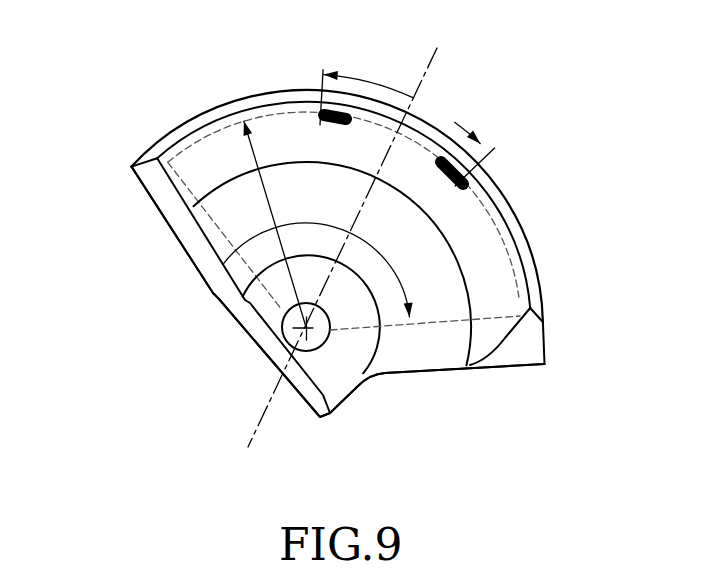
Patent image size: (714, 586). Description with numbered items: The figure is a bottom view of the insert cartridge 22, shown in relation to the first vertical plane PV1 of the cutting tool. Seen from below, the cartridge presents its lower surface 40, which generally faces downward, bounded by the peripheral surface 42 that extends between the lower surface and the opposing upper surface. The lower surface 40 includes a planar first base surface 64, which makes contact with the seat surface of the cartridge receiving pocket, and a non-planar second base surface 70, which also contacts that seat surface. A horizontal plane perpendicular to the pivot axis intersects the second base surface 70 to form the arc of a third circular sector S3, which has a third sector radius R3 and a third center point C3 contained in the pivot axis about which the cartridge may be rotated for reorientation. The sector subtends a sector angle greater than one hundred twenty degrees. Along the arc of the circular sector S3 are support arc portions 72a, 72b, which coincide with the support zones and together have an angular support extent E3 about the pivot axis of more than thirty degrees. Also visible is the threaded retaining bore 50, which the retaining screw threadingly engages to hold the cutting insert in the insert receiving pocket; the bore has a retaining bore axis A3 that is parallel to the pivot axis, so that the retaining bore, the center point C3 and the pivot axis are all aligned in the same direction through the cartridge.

The insert cartridge 22 is at (175, 120).
The lower surface 40 is at (432, 266).
The peripheral surface 42 is at (195, 245).
The threaded retaining bore 50 is at (321, 345).
The planar first base surface 64 is at (344, 357).
The non-planar second base surface 70 is at (202, 158).
The support arc portion 72a is at (320, 117).
The support arc portion 72b is at (442, 172).
The first vertical plane PV1 is at (352, 249).
The angular support extent E3 is at (407, 128).
The third sector radius R3 is at (275, 224).
The retaining bore axis A3 is at (303, 326).
The third center point C3 is at (305, 334).
The third circular sector S3 is at (512, 272).